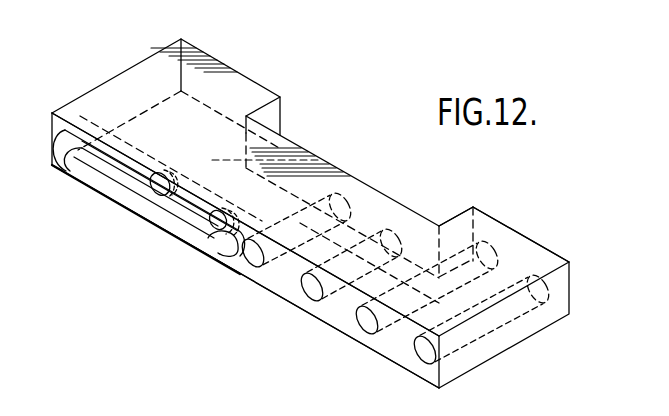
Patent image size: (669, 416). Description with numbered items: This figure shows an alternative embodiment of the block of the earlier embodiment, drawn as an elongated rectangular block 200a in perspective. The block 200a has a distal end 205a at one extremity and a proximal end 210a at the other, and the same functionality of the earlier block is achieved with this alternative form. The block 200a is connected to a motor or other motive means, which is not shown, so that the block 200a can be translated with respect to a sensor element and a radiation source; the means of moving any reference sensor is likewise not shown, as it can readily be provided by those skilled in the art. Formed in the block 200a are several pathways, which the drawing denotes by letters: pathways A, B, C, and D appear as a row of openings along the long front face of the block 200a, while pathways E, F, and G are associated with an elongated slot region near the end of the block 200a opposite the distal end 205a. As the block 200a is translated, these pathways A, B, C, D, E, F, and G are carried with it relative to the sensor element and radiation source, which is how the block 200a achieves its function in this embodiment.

The block 200a is at (131, 63).
The distal end 205a is at (478, 207).
The proximal end 210a is at (393, 348).
The pathway E is at (83, 148).
The pathway F is at (143, 180).
The pathway G is at (215, 247).
The pathway A is at (304, 299).
The pathway B is at (252, 268).
The pathway C is at (423, 358).
The pathway D is at (366, 332).